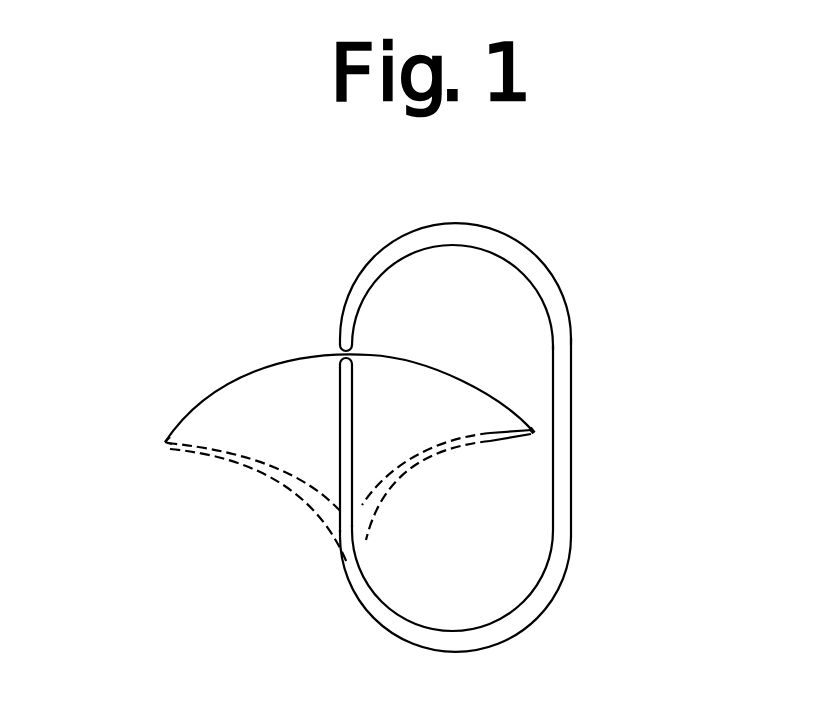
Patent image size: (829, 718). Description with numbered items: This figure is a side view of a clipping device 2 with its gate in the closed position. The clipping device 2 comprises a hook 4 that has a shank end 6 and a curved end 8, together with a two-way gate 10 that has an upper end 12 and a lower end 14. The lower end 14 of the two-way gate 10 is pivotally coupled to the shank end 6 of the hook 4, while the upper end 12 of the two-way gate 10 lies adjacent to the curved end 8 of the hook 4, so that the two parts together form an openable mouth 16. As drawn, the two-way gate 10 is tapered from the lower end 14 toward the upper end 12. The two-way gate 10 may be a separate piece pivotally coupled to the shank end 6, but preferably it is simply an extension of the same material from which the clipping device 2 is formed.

The clipping device 2 is at (562, 282).
The hook 4 is at (580, 423).
The shank end 6 is at (563, 603).
The curved end 8 is at (338, 302).
The two-way gate 10 is at (303, 517).
The upper end 12 is at (153, 445).
The lower end 14 is at (342, 582).
The openable mouth 16 is at (445, 360).